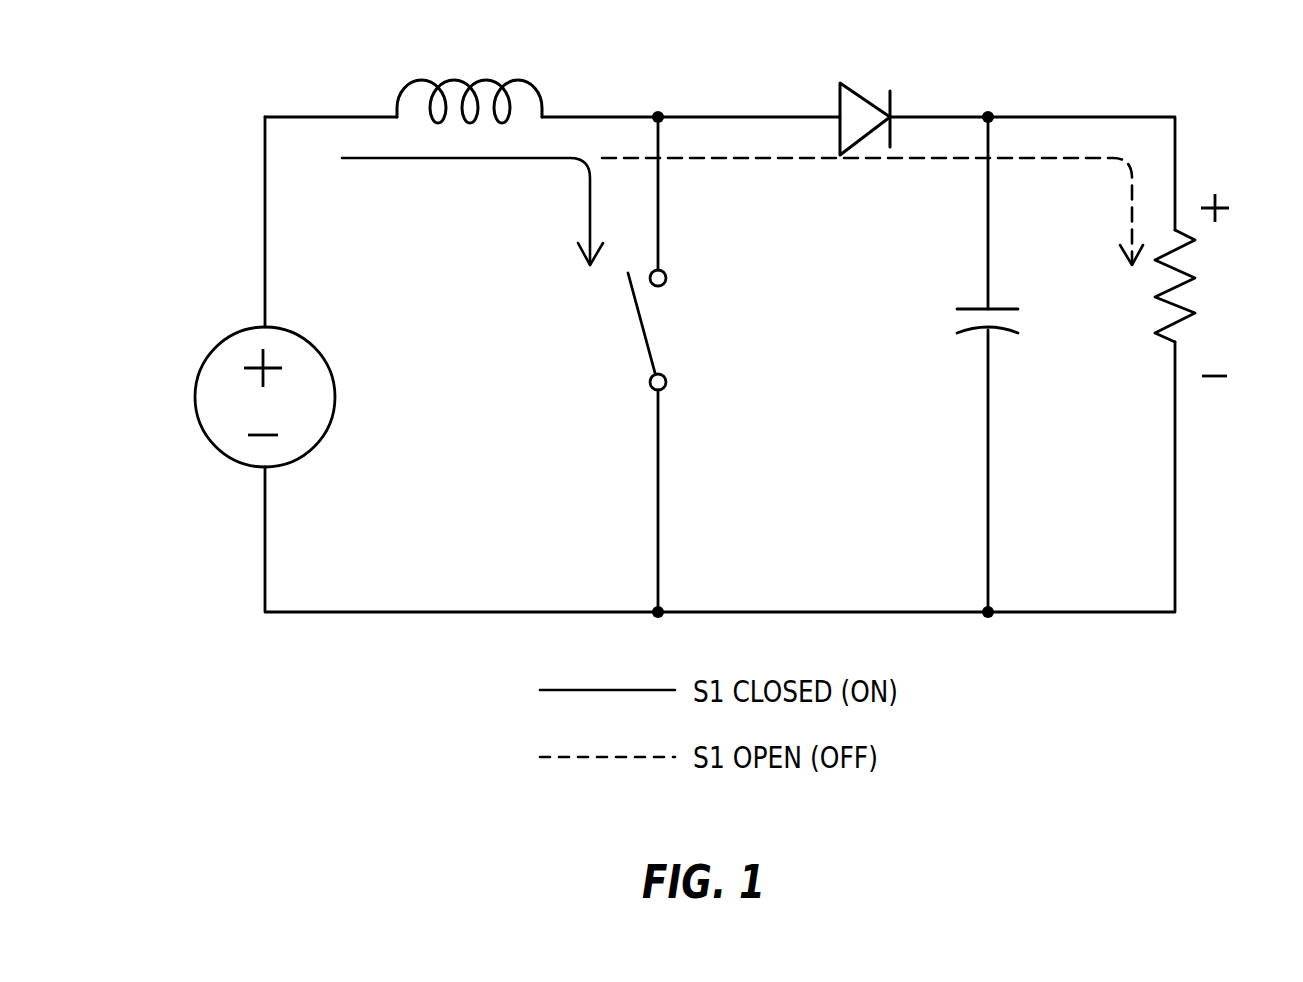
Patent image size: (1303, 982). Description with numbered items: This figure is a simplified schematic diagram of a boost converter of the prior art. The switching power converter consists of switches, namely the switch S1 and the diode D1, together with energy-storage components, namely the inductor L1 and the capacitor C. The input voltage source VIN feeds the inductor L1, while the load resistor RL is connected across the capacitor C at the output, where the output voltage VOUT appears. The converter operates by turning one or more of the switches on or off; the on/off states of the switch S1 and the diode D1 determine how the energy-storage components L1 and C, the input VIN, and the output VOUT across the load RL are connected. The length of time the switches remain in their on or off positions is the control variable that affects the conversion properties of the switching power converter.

The input voltage source VIN is at (224, 397).
The inductor L1 is at (469, 75).
The switch S1 is at (671, 364).
The diode D1 is at (865, 92).
The capacitor C is at (966, 364).
The load resistor RL is at (1151, 288).
The output voltage VOUT is at (1249, 285).